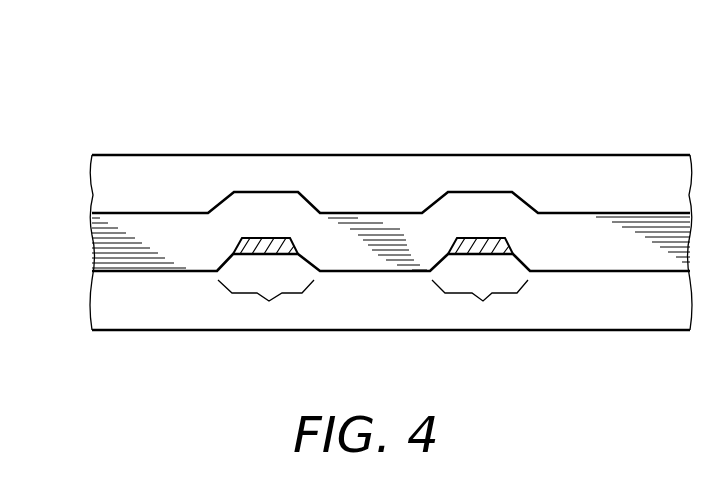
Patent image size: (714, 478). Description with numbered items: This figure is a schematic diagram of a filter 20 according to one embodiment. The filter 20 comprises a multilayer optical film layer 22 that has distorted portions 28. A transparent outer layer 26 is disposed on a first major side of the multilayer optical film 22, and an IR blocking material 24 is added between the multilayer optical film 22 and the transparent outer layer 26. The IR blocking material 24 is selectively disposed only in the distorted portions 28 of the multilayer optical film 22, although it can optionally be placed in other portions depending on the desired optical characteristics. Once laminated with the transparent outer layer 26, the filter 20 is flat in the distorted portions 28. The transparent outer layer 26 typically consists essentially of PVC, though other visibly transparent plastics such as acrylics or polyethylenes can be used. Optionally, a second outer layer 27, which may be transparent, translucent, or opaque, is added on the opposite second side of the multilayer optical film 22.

The filter 20 is at (143, 102).
The multilayer optical film layer 22 is at (609, 255).
The IR blocking material 24 is at (264, 238).
The transparent outer layer 26 is at (609, 315).
The second outer layer 27 is at (609, 193).
The distorted portions 28 is at (483, 301).